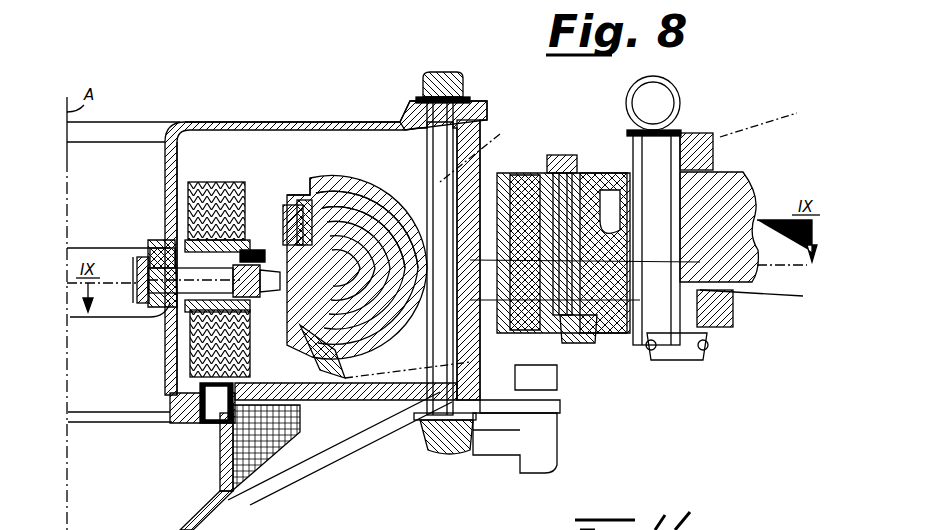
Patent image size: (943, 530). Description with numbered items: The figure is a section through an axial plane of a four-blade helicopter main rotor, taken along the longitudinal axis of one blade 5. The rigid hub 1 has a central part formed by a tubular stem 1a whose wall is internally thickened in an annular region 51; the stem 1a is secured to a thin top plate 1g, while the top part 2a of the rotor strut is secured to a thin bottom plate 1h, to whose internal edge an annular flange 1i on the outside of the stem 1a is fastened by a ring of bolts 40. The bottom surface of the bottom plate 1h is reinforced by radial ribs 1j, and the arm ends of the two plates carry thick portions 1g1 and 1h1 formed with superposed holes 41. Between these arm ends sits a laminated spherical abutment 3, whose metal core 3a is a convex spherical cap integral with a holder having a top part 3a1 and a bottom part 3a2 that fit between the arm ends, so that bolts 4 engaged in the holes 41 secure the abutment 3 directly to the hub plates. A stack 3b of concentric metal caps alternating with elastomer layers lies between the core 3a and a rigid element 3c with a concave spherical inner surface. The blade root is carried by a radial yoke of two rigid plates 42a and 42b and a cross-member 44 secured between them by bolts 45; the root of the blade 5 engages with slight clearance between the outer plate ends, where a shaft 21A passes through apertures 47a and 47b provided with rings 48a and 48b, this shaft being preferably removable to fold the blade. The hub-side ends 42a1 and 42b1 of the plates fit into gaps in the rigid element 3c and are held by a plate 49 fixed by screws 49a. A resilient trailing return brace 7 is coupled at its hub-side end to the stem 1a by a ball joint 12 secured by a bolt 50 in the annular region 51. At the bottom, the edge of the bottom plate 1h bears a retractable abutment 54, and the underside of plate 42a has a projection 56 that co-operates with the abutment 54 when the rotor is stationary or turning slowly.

The rigid hub 1 is at (316, 112).
The tubular stem 1a is at (172, 175).
The top plate 1g is at (237, 122).
The thick portion 1g1 is at (470, 100).
The bottom plate 1h is at (342, 420).
The thick portion 1h1 is at (520, 365).
The annular flange 1i is at (240, 392).
The radial ribs 1j is at (290, 470).
The top part of rotor strut 2a is at (220, 465).
The laminated spherical abutment 3 is at (344, 165).
The metal core 3a is at (427, 178).
The top part of holder 3a1 is at (490, 130).
The bottom part of holder 3a2 is at (407, 367).
The stack of rigid metal caps and elastomer layers 3b is at (382, 180).
The rigid element 3c is at (330, 200).
The bolts 4 is at (440, 160).
The blade 5 is at (752, 200).
The resilient trailing return brace 7 is at (241, 173).
The ball joint 12 is at (165, 322).
The shaft 21A is at (735, 175).
The ring of bolts 40 is at (170, 380).
The holes 41 is at (408, 112).
The rigid plate 42a is at (618, 117).
The end of plate 42a nearer hub 42a1 is at (300, 205).
The rigid plate 42b is at (645, 349).
The end of plate 42b nearer hub 42b1 is at (315, 352).
The cross-member 44 is at (585, 259).
The bolts 45 is at (587, 195).
The apertures 47a is at (707, 130).
The apertures 47b is at (733, 305).
The ring 48a is at (698, 130).
The ring 48b is at (712, 345).
The plate 49 is at (248, 300).
The screws 49a is at (300, 215).
The bolt 50 is at (125, 262).
The annular region 51 is at (155, 245).
The abutment 54 is at (555, 412).
The projection 56 is at (585, 350).